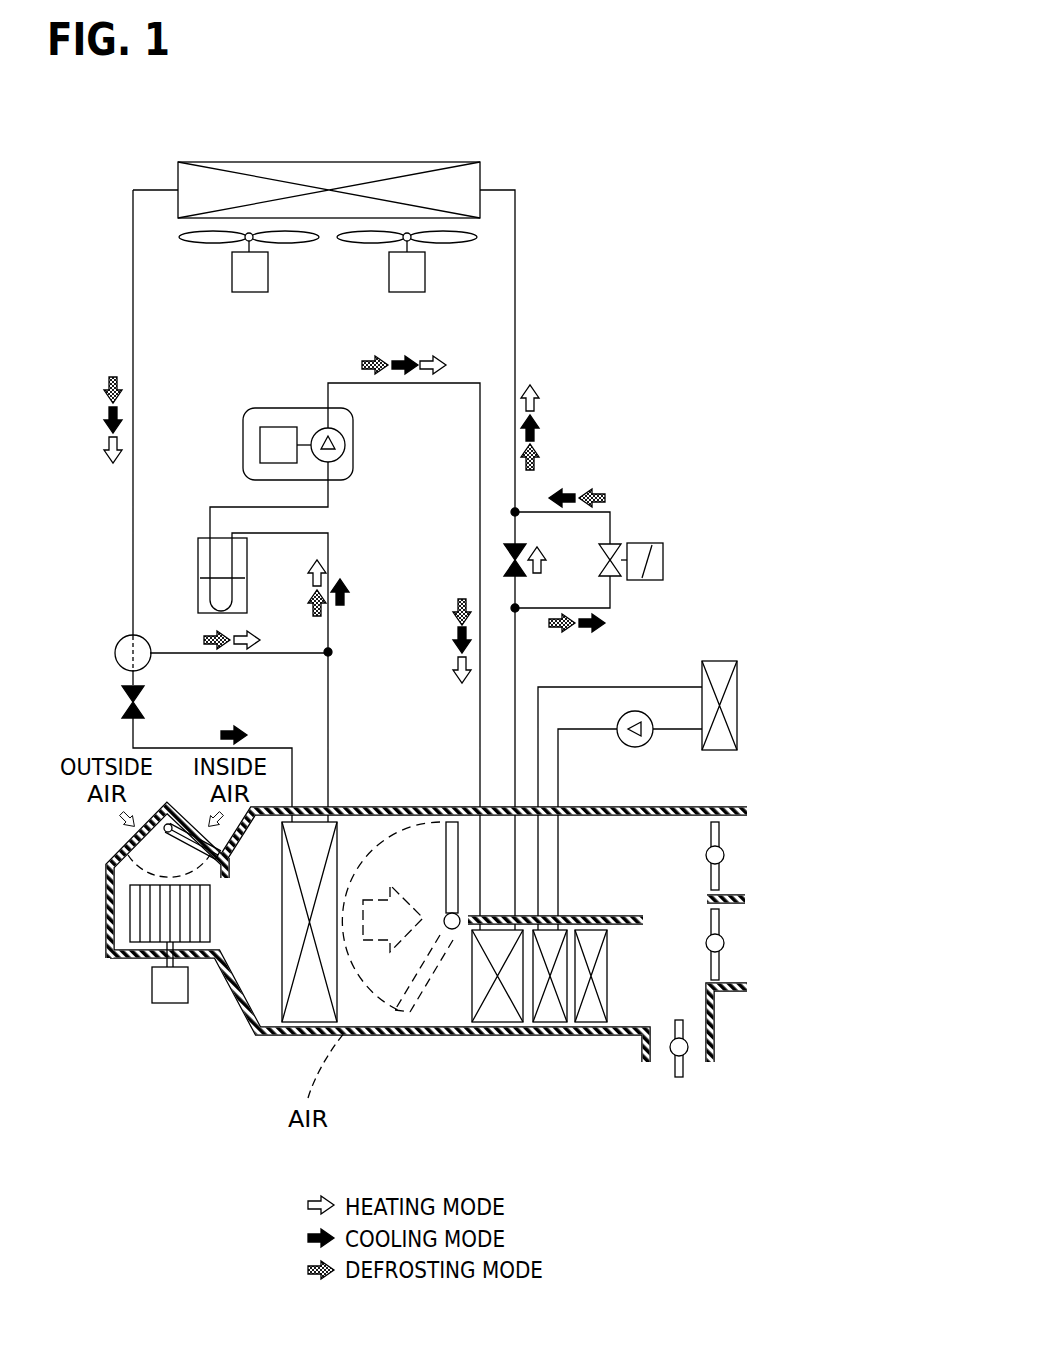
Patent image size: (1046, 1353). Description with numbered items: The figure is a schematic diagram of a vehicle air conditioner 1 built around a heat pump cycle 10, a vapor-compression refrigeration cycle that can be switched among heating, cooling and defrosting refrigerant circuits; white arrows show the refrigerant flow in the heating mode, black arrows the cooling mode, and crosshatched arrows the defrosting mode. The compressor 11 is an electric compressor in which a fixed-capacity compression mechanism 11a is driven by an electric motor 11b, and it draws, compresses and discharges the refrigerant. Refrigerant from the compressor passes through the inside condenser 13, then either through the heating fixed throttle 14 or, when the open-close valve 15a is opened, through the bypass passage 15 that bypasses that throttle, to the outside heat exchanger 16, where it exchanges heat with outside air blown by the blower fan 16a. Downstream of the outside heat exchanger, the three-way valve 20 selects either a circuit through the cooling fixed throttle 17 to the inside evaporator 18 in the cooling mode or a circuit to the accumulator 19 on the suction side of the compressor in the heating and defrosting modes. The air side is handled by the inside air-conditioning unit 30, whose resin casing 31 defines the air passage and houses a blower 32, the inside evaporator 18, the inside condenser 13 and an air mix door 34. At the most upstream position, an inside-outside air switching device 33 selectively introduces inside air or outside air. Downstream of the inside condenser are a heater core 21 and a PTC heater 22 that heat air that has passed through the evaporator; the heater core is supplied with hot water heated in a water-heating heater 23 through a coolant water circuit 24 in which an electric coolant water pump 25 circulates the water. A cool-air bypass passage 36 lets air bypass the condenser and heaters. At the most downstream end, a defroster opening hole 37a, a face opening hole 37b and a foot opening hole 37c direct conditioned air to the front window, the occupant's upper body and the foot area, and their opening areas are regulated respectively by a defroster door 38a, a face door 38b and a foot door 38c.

The vehicle air conditioner 1 is at (560, 194).
The heat pump cycle 10 is at (543, 317).
The compressor 11 is at (298, 420).
The fixed-capacity compression mechanism 11a is at (358, 448).
The electric motor 11b is at (243, 445).
The inside condenser 13 is at (470, 1000).
The heating fixed throttle 14 is at (521, 572).
The bypass passage 15 is at (616, 560).
The open-close valve 15a is at (644, 543).
The outside heat exchanger 16 is at (447, 162).
The blower fan 16a is at (300, 240).
The cooling fixed throttle 17 is at (144, 699).
The inside evaporator 18 is at (340, 822).
The accumulator 19 is at (247, 578).
The three-way valve 20 is at (119, 647).
The heater core 21 is at (548, 1010).
The PTC heater 22 is at (605, 995).
The water-heating heater 23 is at (738, 711).
The coolant water circuit 24 is at (603, 686).
The coolant water pump 25 is at (646, 748).
The inside air-conditioning unit 30 is at (506, 1052).
The casing 31 is at (110, 906).
The blower 32 is at (171, 1005).
The inside-outside air switching device 33 is at (118, 851).
The air mix door 34 is at (453, 818).
The cool-air bypass passage 36 is at (597, 868).
The defroster opening hole 37a is at (745, 897).
The face opening hole 37b is at (747, 986).
The foot opening hole 37c is at (700, 1065).
The defroster door 38a is at (719, 836).
The face door 38b is at (719, 925).
The foot door 38c is at (679, 1062).